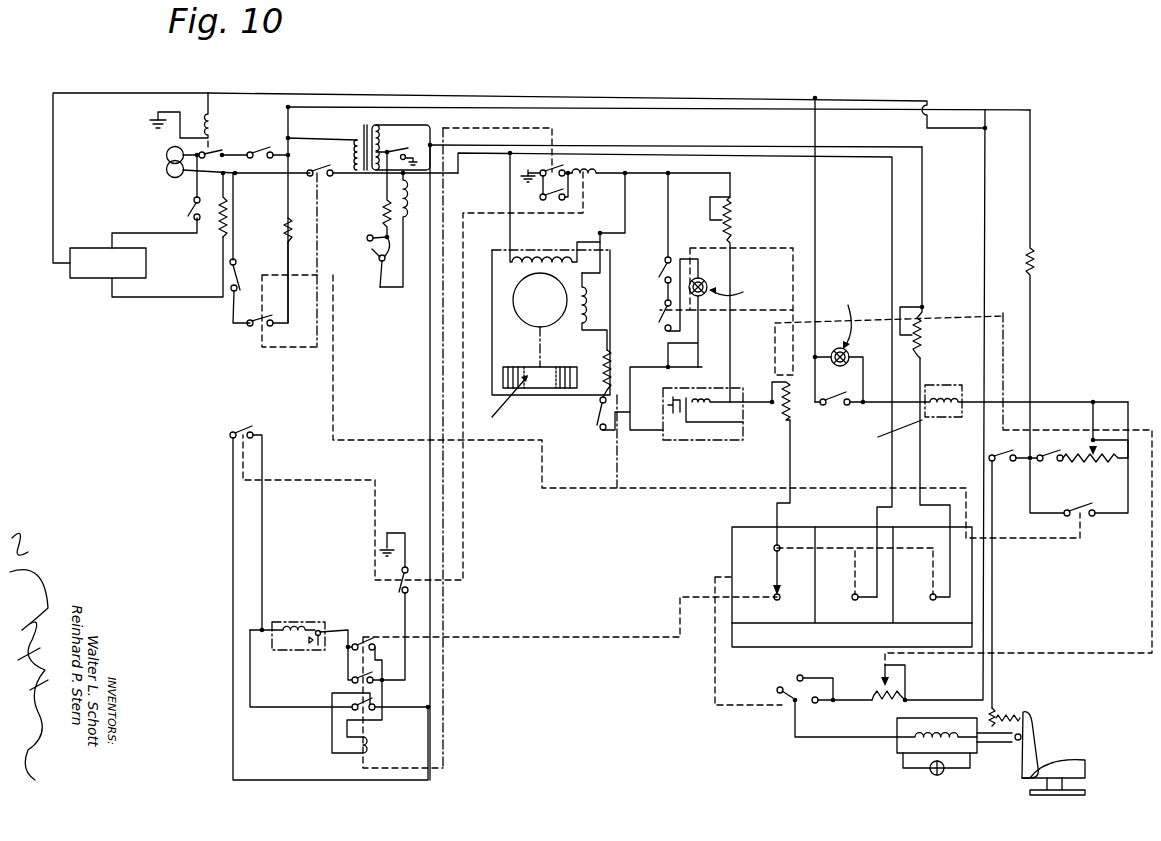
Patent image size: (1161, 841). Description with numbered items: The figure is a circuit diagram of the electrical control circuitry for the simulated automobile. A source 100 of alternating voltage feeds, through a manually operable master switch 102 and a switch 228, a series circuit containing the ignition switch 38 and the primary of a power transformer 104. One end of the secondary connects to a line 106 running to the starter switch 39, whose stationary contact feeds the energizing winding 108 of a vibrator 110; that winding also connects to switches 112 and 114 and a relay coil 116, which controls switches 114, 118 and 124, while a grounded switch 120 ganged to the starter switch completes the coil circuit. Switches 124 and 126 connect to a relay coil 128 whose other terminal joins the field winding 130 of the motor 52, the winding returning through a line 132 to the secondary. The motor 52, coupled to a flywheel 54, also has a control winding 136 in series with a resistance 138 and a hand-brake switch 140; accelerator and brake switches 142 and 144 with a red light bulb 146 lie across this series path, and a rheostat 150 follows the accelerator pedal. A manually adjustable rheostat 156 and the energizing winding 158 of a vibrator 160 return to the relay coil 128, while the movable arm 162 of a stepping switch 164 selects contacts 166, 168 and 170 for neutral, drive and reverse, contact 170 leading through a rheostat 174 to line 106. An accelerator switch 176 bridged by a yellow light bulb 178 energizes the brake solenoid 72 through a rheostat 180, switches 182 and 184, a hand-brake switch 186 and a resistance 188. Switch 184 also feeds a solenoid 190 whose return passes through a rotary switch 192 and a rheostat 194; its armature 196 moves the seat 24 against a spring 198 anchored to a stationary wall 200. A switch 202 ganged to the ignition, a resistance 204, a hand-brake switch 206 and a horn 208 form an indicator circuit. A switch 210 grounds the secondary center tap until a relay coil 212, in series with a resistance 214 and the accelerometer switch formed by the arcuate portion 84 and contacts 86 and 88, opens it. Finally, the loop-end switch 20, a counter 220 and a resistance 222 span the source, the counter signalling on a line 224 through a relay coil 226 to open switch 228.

The switch 20 is at (190, 210).
The seat 24 is at (1035, 722).
The ignition switch 38 is at (331, 181).
The starter switch 39 is at (232, 432).
The motor 52 is at (530, 330).
The flywheel 54 is at (529, 366).
The brake solenoid 72 is at (934, 420).
The arcuate portion 84 is at (371, 254).
The contact 86 is at (367, 241).
The contact 88 is at (391, 262).
The source of alternating voltage 100 is at (168, 165).
The master switch 102 is at (262, 150).
The power transformer 104 is at (365, 185).
The line 106 is at (845, 153).
The energizing winding 108 is at (289, 627).
The vibrator 110 is at (316, 622).
The switch 112 is at (358, 644).
The switch 114 is at (352, 677).
The relay coil 116 is at (370, 746).
The switch 118 is at (378, 708).
The switch 120 is at (402, 592).
The switch 124 is at (565, 166).
The switch 126 is at (541, 194).
The relay coil 128 is at (584, 177).
The field winding 130 is at (551, 274).
The line 132 is at (503, 158).
The control winding 136 is at (580, 328).
The resistance 138 is at (603, 366).
The switch 140 is at (598, 421).
The switch 142 is at (660, 270).
The switch 144 is at (660, 318).
The light bulb 146 is at (705, 278).
The rheostat 150 is at (792, 408).
The rheostat 156 is at (735, 226).
The energizing winding 158 is at (705, 410).
The vibrator 160 is at (722, 441).
The movable arm 162 is at (774, 551).
The stepping switch 164 is at (840, 543).
The stationary contact 166 is at (780, 595).
The stationary contact 168 is at (852, 597).
The stationary contact 170 is at (930, 597).
The rheostat 174 is at (922, 341).
The switch 176 is at (843, 408).
The light bulb 178 is at (851, 357).
The rheostat 180 is at (1086, 462).
The switch 182 is at (1052, 464).
The switch 184 is at (993, 465).
The switch 186 is at (1076, 508).
The resistance 188 is at (1036, 264).
The solenoid 190 is at (960, 734).
The rotary switch 192 is at (806, 705).
The rheostat 194 is at (869, 688).
The armature 196 is at (1004, 745).
The spring 198 is at (1010, 712).
The stationary wall 200 is at (994, 708).
The switch 202 is at (258, 328).
The resistance 204 is at (287, 232).
The switch 206 is at (240, 282).
The horn 208 is at (236, 216).
The switch 210 is at (398, 148).
The relay coil 212 is at (408, 208).
The resistance 214 is at (383, 222).
The counter 220 is at (147, 270).
The resistance 222 is at (221, 222).
The line 224 is at (53, 244).
The relay coil 226 is at (213, 110).
The switch 228 is at (218, 146).